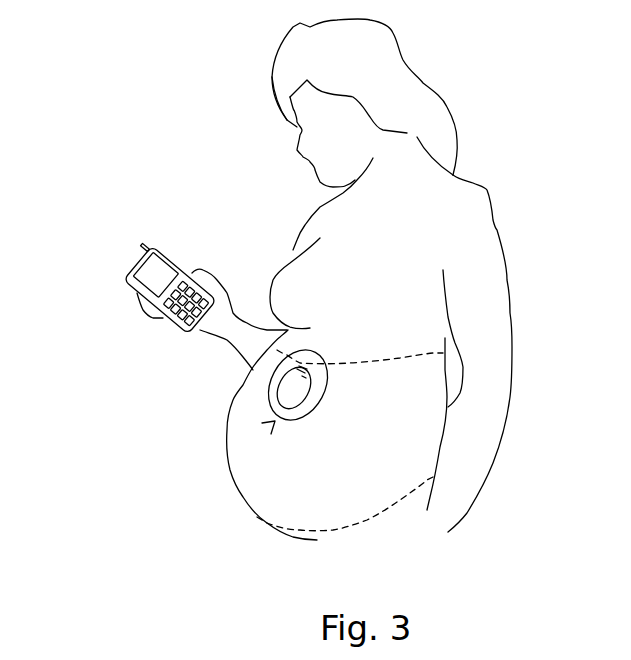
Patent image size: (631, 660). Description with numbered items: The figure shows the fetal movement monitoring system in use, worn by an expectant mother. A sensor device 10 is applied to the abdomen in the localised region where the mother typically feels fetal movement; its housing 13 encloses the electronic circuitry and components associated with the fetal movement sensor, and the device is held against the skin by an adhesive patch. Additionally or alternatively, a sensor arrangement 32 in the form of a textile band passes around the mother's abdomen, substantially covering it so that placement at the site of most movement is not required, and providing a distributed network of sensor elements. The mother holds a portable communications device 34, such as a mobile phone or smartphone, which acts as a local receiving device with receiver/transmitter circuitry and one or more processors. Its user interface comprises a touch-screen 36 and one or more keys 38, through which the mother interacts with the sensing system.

The sensor device 10 is at (273, 422).
The housing 13 is at (277, 385).
The sensor arrangement 32 is at (403, 355).
The portable communications device 34 is at (129, 260).
The touch-screen 36 is at (163, 267).
The keys 38 is at (147, 211).